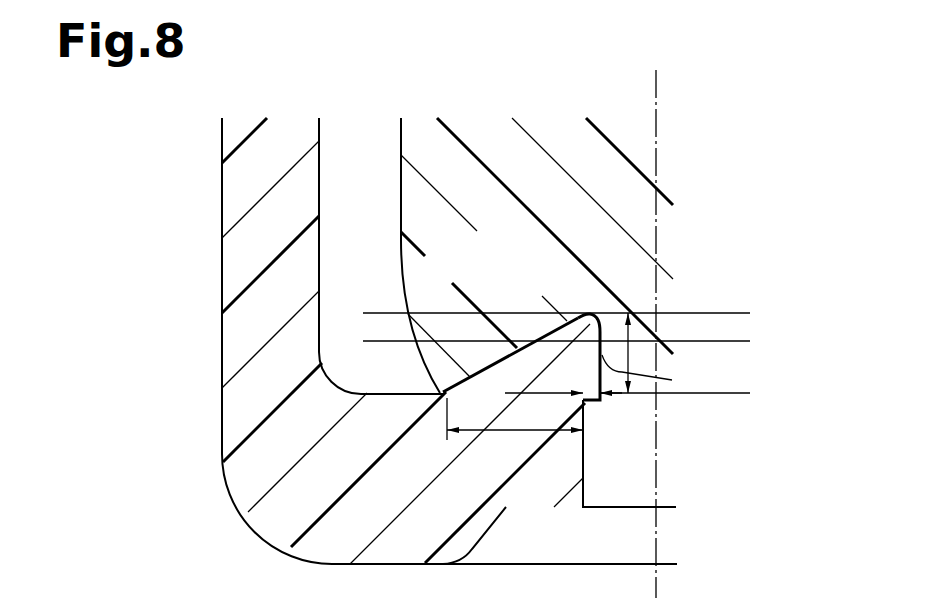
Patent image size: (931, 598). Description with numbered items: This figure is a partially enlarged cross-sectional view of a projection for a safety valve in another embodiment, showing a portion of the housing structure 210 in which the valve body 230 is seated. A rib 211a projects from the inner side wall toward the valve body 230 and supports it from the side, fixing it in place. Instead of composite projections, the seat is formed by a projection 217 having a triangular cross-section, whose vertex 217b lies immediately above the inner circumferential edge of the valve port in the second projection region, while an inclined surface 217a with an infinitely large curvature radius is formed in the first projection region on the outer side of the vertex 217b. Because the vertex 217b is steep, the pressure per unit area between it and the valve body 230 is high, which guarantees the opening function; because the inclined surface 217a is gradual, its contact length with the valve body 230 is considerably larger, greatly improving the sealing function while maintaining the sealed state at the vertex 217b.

The housing body 210 is at (228, 271).
The rib 211a is at (360, 130).
The projection 217 is at (516, 350).
The inclined surface 217a is at (528, 343).
The vertex 217b is at (596, 306).
The valve body 230 is at (643, 223).